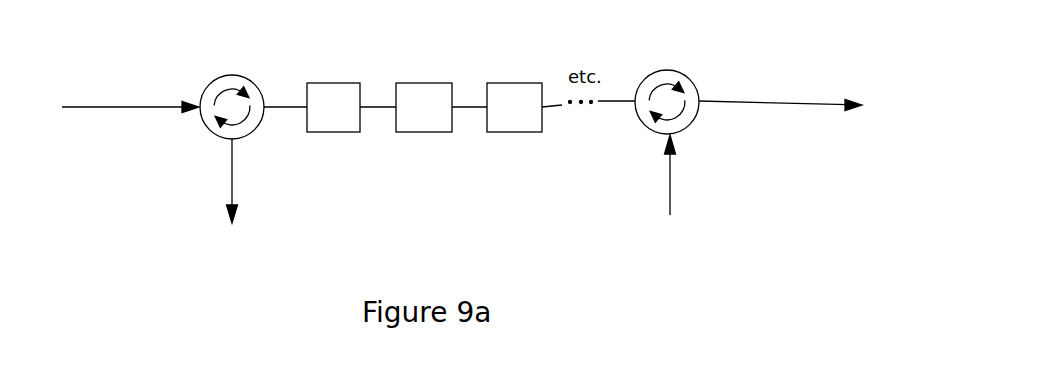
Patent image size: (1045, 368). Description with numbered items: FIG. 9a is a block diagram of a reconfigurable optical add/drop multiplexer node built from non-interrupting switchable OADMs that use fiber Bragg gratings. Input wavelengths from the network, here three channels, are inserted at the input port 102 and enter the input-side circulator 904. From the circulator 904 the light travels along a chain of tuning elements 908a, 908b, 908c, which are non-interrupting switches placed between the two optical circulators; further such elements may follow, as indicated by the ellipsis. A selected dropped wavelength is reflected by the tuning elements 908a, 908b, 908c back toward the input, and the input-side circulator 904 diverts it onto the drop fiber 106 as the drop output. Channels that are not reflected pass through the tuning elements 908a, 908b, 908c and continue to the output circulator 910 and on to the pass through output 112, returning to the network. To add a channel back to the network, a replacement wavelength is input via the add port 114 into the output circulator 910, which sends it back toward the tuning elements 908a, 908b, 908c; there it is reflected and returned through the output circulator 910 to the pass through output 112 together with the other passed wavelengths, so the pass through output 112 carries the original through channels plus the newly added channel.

The input port 102 is at (130, 87).
The input-side optical circulator 904 is at (232, 92).
The drop fiber 106 is at (215, 185).
The tuning element 908a is at (333, 122).
The tuning element 908b is at (424, 122).
The tuning element 908c is at (514, 122).
The output circulator 910 is at (667, 85).
The add port 114 is at (678, 196).
The pass through output 112 is at (780, 76).